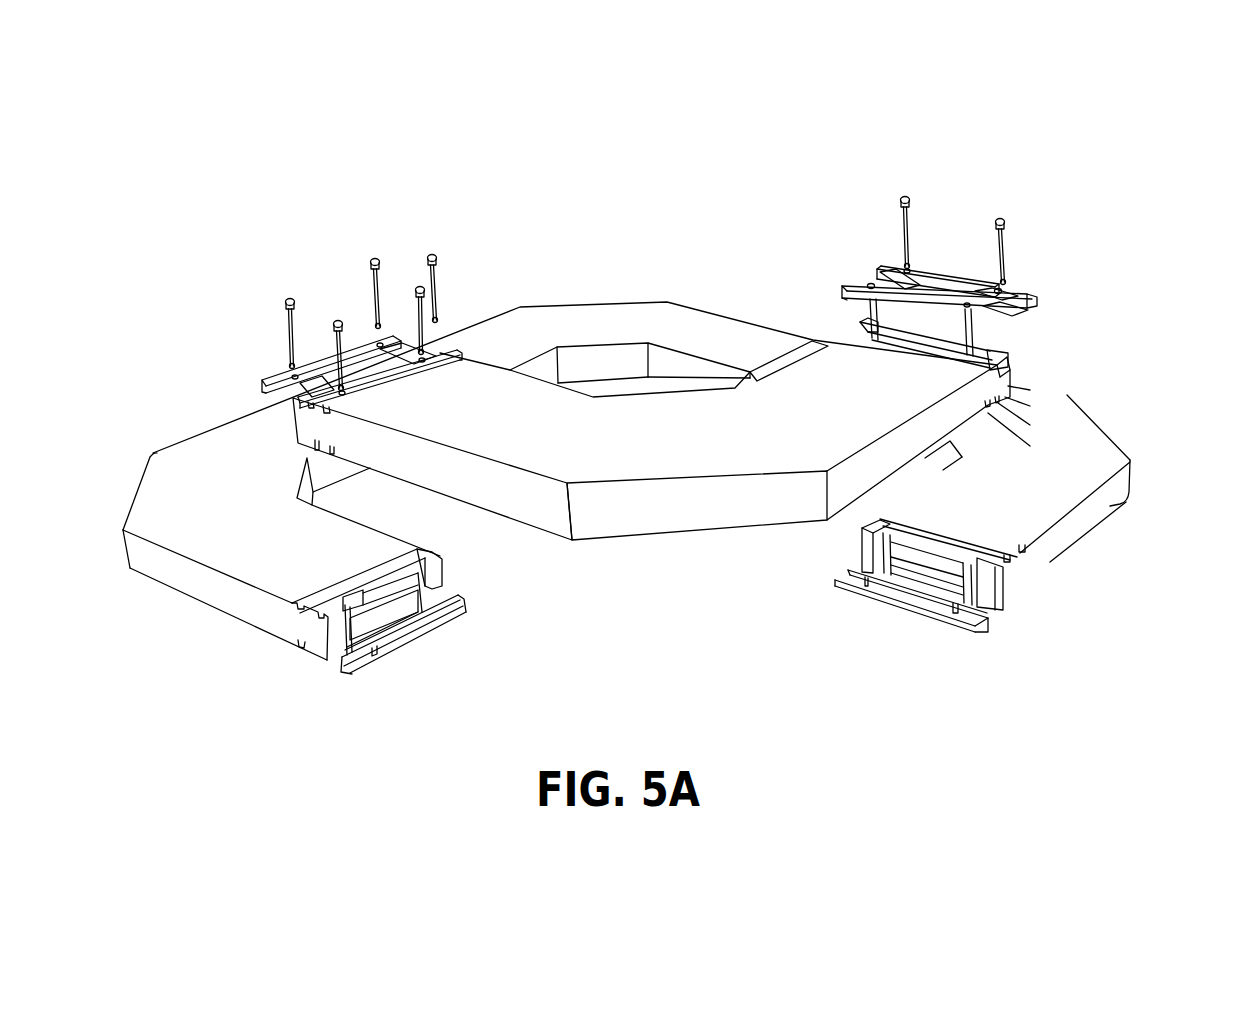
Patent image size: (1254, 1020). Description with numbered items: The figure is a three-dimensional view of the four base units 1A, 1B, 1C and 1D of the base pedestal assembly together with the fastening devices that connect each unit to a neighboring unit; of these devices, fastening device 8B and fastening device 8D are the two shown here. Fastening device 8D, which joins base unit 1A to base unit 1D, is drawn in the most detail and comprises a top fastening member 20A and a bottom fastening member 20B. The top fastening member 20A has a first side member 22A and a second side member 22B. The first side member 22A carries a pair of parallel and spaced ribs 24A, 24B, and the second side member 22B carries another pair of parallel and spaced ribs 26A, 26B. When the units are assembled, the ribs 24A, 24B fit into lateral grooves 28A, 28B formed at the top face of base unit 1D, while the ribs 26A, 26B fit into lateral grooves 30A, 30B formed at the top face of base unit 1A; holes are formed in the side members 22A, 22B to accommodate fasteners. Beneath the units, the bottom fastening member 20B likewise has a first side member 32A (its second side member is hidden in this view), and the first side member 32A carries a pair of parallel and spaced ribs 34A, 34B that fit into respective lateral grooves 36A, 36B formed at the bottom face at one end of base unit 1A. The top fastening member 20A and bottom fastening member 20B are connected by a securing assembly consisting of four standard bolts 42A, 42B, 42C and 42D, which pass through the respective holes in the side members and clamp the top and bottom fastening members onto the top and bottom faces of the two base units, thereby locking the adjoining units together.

The base unit 1A is at (507, 521).
The base unit 1B is at (228, 615).
The base unit 1C is at (718, 306).
The base unit 1D is at (1080, 540).
The fastening device 8B is at (255, 353).
The fastening device 8D is at (983, 198).
The top fastening member 20A is at (949, 250).
The bottom fastening member 20B is at (920, 610).
The first side member 22A is at (978, 282).
The second side member 22B is at (843, 291).
The rib 24A is at (1030, 300).
The rib 24B is at (1038, 313).
The rib 26A is at (1012, 319).
The rib 26B is at (1003, 348).
The lateral groove 28A is at (1024, 550).
The lateral groove 28B is at (1008, 561).
The lateral groove 30A is at (1008, 386).
The lateral groove 30B is at (1005, 397).
The first side member 32A is at (860, 583).
The rib 34A is at (990, 613).
The rib 34B is at (975, 629).
The lateral groove 36A is at (998, 403).
The lateral groove 36B is at (988, 413).
The bolt 42A is at (871, 283).
The bolt 42B is at (1000, 290).
The bolt 42C is at (902, 197).
The bolt 42D is at (1007, 240).